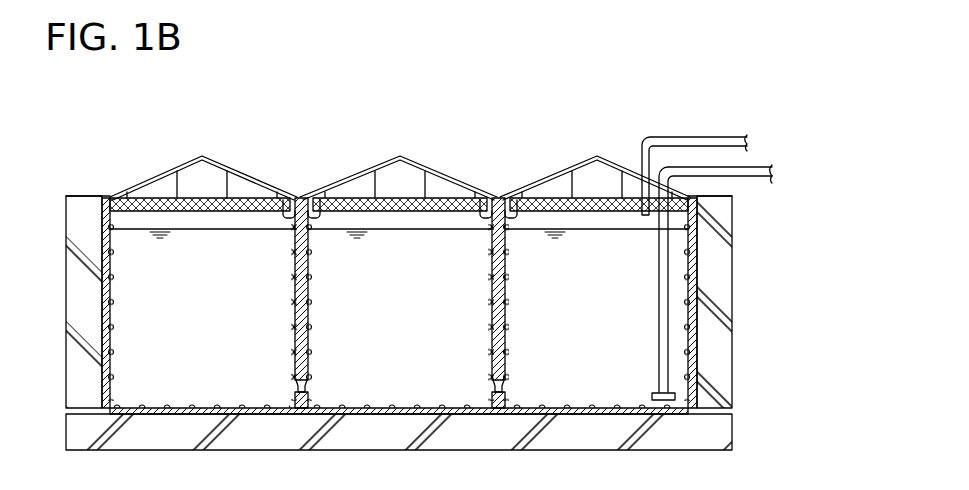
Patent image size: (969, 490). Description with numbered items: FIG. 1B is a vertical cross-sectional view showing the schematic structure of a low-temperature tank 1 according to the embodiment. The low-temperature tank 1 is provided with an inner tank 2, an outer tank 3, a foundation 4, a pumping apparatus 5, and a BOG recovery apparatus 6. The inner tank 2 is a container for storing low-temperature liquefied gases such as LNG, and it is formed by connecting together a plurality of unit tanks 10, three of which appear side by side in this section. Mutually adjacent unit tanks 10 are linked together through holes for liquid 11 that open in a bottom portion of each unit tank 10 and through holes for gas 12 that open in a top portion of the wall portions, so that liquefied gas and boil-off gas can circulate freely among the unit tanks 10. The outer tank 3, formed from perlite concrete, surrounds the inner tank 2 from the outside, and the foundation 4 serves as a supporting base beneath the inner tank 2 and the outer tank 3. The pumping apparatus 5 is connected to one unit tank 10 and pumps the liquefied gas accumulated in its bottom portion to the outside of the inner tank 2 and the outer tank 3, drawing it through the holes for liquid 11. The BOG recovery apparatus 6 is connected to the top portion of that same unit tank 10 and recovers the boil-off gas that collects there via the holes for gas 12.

The low-temperature tank 1 is at (700, 122).
The inner tank 2 is at (422, 226).
The outer tank 3 is at (712, 311).
The foundation 4 is at (733, 436).
The pumping apparatus 5 is at (736, 176).
The BOG recovery apparatus 6 is at (672, 137).
The unit tank 10 is at (126, 314).
The hole for liquid 11 is at (296, 385).
The hole for gas 12 is at (283, 200).